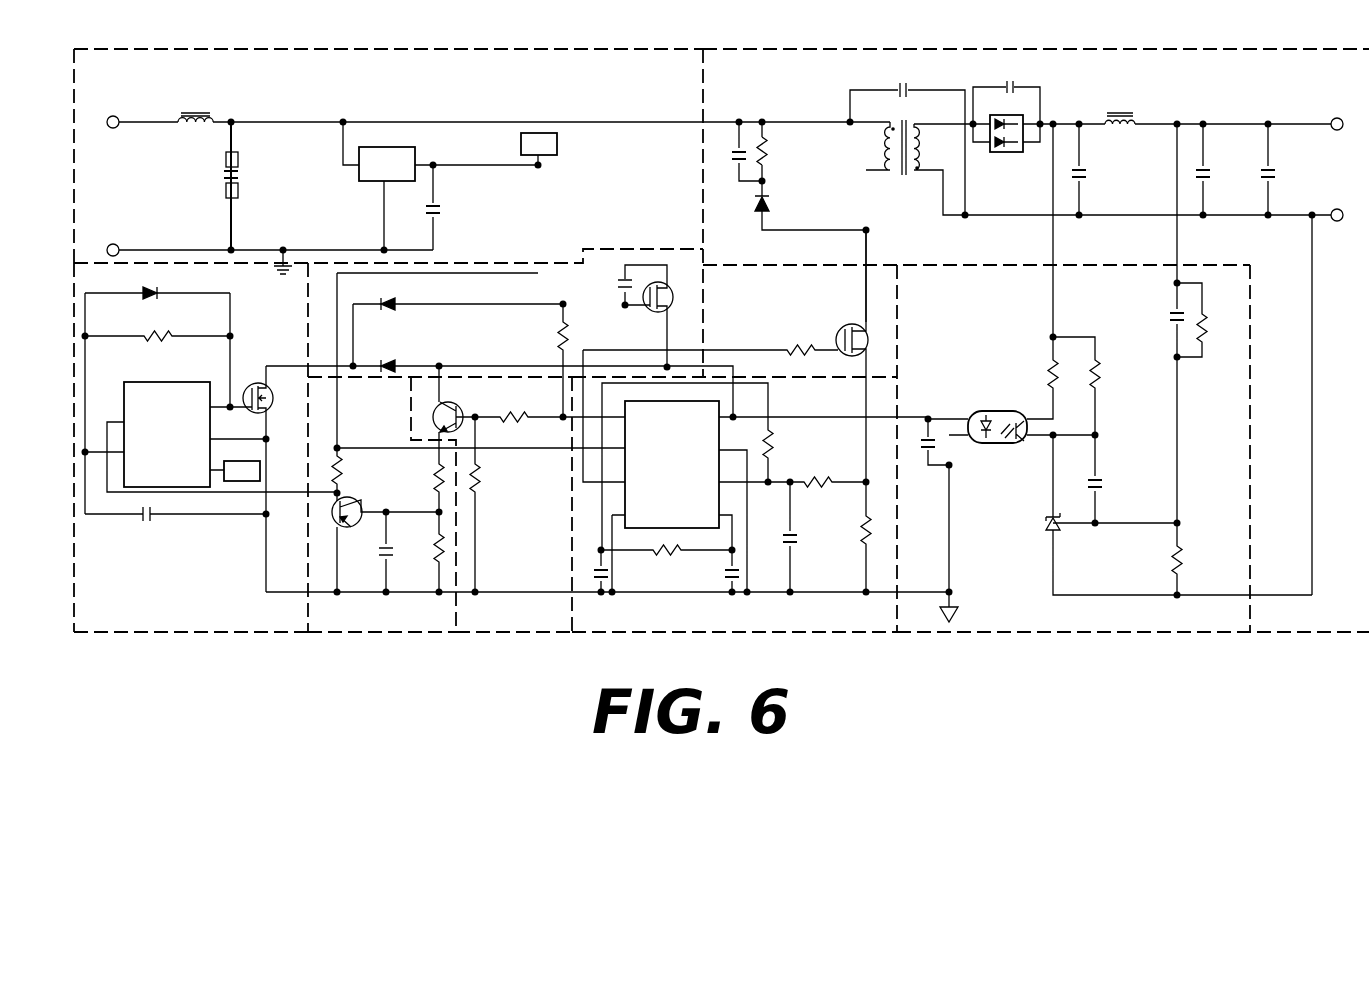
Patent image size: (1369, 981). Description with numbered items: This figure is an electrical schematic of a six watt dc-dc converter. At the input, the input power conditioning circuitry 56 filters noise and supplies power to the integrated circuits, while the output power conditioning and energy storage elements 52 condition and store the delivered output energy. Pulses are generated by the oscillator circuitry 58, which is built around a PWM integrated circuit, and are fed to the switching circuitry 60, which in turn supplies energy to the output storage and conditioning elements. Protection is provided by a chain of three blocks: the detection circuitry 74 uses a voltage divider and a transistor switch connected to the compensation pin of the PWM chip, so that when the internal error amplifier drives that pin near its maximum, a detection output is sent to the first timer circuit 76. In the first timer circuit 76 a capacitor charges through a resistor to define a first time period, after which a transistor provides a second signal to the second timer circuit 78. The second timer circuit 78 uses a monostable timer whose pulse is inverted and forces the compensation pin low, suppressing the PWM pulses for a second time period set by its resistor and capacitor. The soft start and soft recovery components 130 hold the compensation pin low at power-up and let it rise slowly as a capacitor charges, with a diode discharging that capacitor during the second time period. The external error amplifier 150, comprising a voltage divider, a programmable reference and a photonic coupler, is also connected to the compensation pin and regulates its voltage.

The output power conditioning and energy storage elements 52 is at (805, 72).
The input power conditioning circuitry 56 is at (148, 60).
The oscillator circuitry 58 is at (733, 612).
The switching circuitry 60 is at (746, 298).
The detection circuitry 74 is at (522, 605).
The first timer circuit 76 is at (377, 610).
The second timer circuit 78 is at (175, 600).
The soft start and soft recovery components 130 is at (548, 290).
The external error amplifier 150 is at (1108, 610).